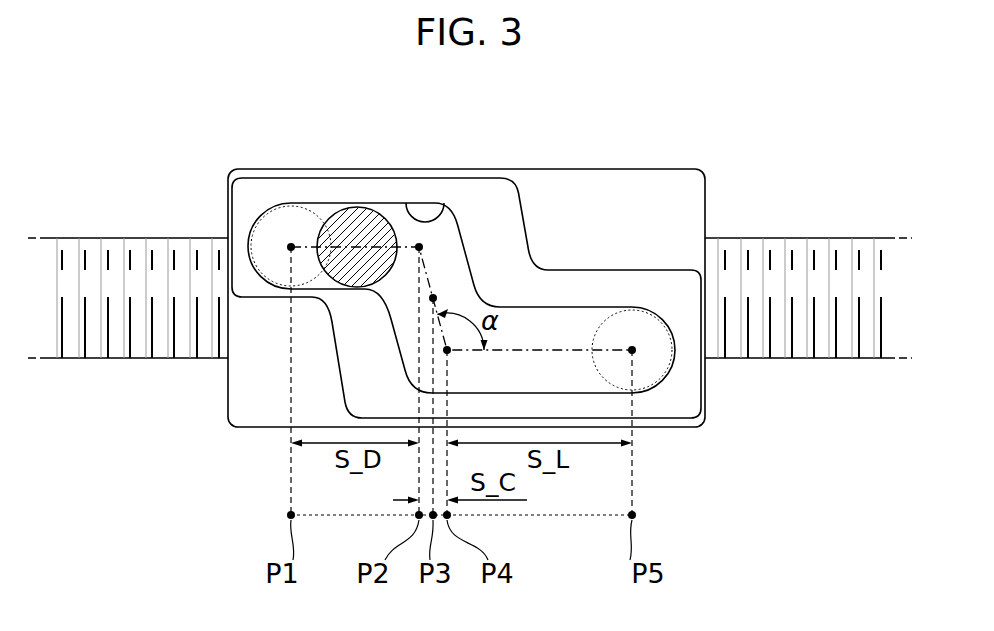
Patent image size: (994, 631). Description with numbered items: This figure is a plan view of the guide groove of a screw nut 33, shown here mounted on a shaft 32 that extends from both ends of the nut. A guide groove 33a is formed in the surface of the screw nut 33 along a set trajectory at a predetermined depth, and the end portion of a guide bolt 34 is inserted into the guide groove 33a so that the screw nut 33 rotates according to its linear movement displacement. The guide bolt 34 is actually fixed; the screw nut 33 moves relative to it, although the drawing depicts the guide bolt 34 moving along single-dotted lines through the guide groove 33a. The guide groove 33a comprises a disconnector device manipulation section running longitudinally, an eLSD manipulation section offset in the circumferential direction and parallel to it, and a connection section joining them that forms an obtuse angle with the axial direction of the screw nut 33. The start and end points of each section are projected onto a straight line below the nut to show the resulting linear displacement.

The shaft 32 is at (158, 238).
The screw nut 33 is at (589, 183).
The guide groove 33a is at (437, 216).
The guide bolt 34 is at (352, 222).